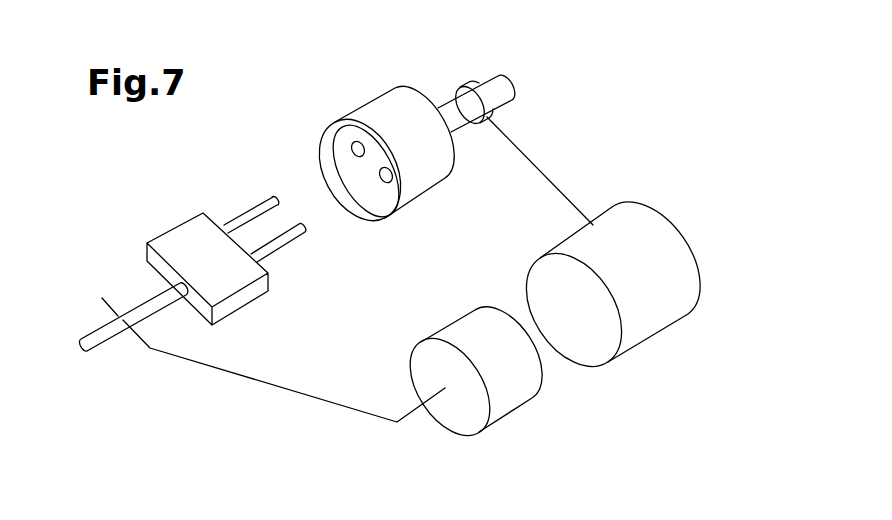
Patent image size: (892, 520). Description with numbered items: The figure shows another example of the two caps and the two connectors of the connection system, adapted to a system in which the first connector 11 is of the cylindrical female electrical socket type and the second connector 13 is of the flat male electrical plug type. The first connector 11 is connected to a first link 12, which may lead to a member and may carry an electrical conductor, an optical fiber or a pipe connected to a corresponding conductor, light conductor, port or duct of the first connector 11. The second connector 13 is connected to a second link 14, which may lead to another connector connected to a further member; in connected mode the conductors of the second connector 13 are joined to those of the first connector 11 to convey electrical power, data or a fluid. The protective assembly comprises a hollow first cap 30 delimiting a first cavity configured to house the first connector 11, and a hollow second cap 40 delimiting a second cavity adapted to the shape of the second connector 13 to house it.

The first connector 11 is at (378, 117).
The first link 12 is at (490, 87).
The second connector 13 is at (190, 238).
The second link 14 is at (97, 333).
The first cap 30 is at (648, 222).
The second cap 40 is at (468, 330).